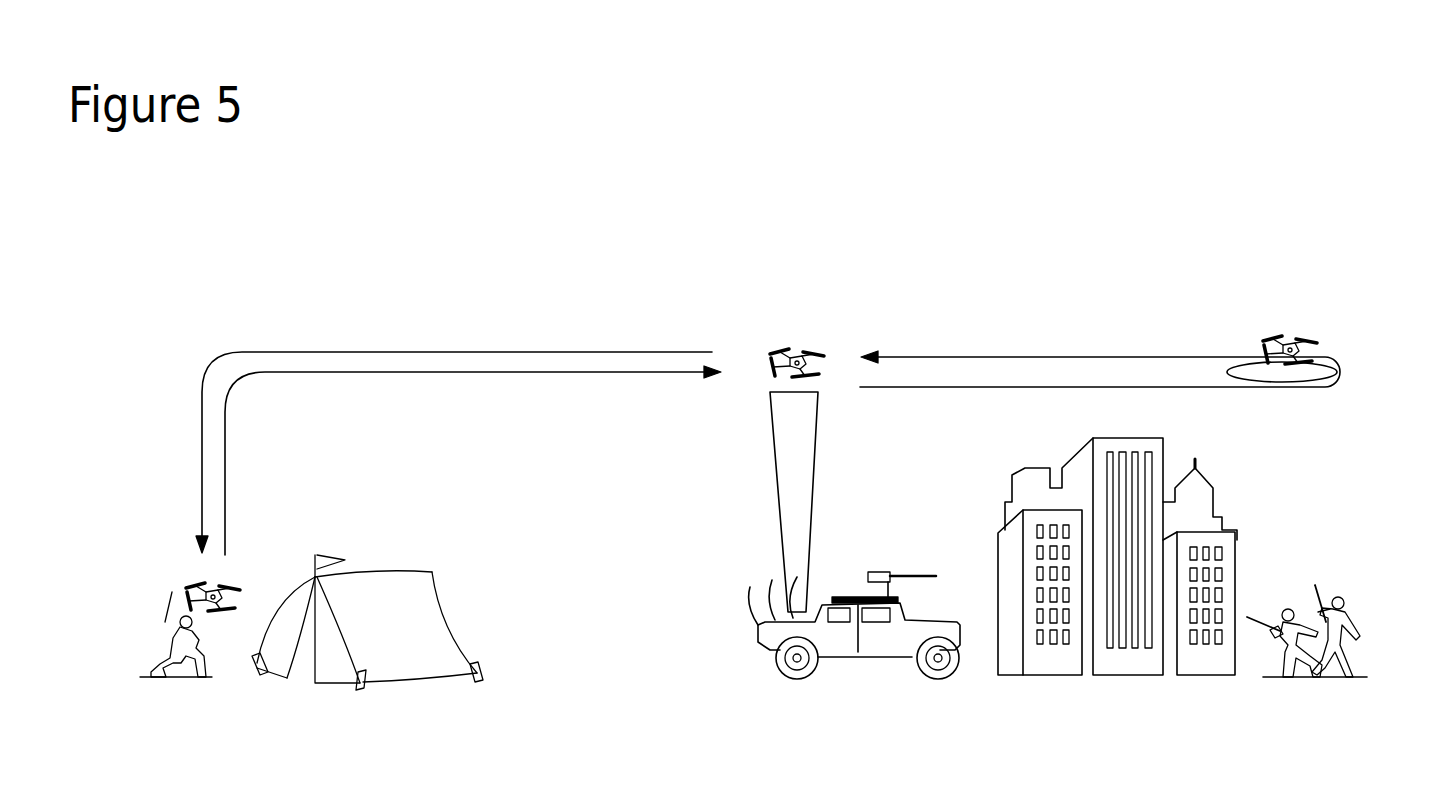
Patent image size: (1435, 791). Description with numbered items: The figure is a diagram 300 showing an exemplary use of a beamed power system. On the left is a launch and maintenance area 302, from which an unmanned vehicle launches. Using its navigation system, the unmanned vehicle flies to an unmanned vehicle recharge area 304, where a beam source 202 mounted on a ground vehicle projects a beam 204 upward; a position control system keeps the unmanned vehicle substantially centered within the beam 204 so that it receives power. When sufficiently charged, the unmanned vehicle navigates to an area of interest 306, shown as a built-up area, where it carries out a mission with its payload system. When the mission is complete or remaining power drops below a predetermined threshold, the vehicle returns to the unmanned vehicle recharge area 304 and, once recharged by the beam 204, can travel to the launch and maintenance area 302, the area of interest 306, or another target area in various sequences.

The beam source 202 is at (758, 640).
The beam 204 is at (806, 470).
The diagram 300 is at (675, 212).
The launch and maintenance area 302 is at (158, 595).
The unmanned vehicle recharge area 304 is at (751, 480).
The area of interest 306 is at (1290, 526).